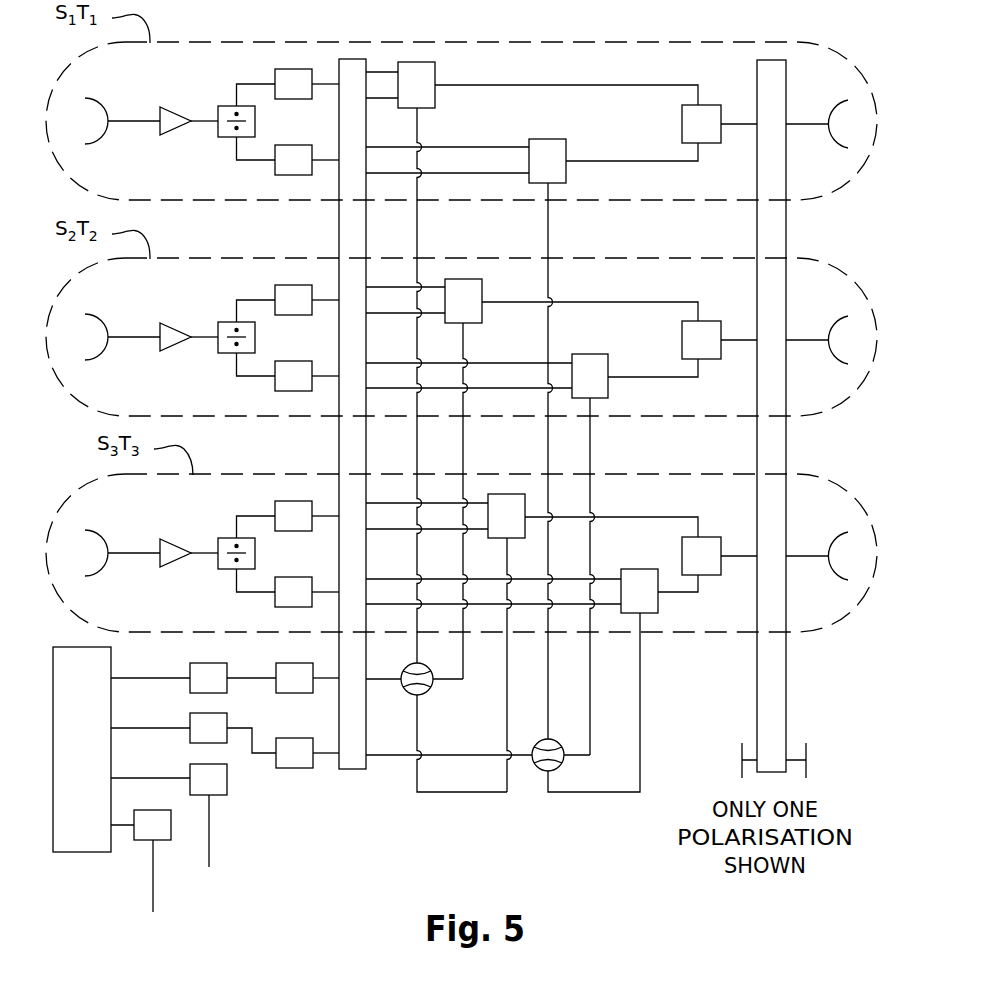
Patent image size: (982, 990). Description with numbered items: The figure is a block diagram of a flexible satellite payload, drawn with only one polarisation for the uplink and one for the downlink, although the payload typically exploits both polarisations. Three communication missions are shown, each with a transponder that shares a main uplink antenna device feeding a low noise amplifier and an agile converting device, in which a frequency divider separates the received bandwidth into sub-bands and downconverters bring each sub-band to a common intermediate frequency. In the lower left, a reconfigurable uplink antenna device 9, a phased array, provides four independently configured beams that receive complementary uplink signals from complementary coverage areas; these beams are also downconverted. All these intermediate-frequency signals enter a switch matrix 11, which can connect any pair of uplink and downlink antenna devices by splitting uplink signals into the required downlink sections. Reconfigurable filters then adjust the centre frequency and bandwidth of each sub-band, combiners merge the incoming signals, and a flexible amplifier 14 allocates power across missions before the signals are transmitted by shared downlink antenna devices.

The reconfigurable uplink antenna device 9 is at (80, 842).
The switch matrix 11 is at (353, 64).
The flexible amplifier 14 is at (779, 77).